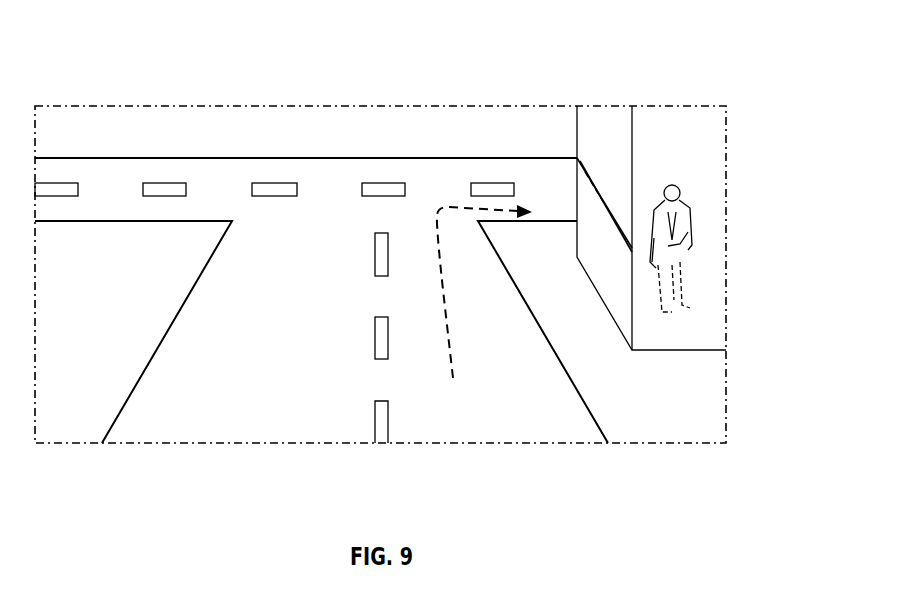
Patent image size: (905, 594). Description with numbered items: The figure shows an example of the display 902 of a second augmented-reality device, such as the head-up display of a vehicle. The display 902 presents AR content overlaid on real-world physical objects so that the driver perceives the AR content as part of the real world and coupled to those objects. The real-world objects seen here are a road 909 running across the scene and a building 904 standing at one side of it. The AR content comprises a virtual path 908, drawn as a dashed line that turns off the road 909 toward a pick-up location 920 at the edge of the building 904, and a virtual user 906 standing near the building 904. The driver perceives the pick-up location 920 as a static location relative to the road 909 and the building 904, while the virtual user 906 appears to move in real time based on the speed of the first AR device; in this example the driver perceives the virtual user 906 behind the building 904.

The display 902 is at (266, 106).
The building 904 is at (695, 332).
The virtual user 906 is at (690, 240).
The virtual path 908 is at (448, 317).
The road 909 is at (337, 183).
The pick-up location 920 is at (597, 178).